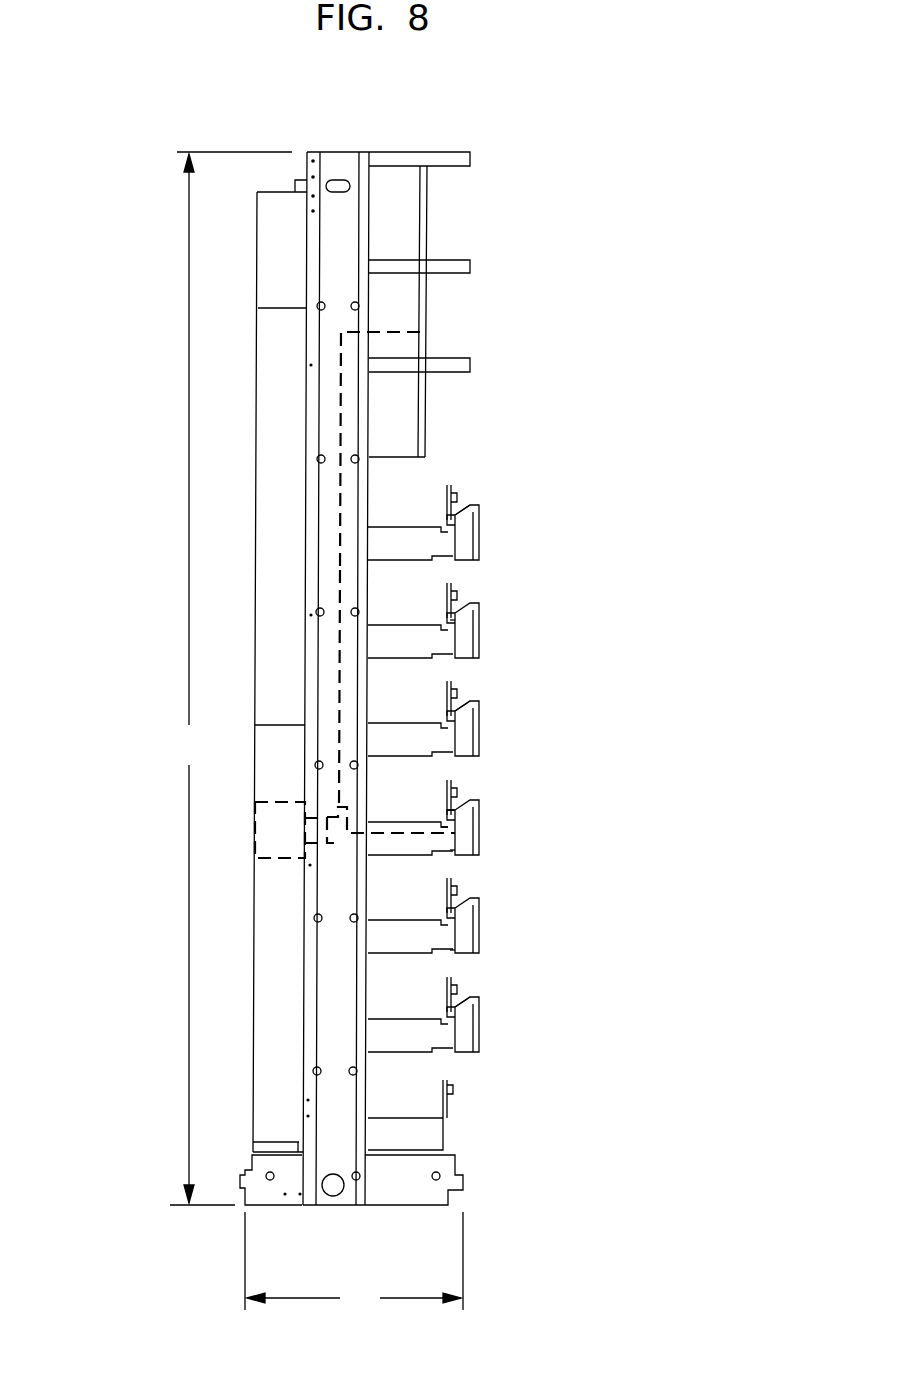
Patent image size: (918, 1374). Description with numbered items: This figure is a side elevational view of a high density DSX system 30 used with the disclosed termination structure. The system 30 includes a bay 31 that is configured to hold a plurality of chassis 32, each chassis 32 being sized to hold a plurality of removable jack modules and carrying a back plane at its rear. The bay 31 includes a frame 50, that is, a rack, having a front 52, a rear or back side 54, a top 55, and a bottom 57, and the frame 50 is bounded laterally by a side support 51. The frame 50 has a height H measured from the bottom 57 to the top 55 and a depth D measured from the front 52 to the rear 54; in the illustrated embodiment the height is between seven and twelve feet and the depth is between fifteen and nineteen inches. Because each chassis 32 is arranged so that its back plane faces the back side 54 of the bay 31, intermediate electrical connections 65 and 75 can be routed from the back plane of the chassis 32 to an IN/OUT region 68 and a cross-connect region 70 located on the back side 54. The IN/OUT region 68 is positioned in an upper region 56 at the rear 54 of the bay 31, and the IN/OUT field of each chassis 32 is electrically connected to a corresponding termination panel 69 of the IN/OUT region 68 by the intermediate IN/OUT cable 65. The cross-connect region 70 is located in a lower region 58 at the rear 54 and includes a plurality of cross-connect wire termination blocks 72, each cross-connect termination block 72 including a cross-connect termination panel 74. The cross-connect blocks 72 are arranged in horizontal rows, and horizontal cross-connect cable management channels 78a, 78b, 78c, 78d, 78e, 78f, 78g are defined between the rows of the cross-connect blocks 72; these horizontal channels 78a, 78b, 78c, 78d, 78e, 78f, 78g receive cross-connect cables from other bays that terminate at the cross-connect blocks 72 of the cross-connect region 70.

The high density DSX system 30 is at (127, 273).
The bay 31 is at (139, 409).
The chassis 32 is at (255, 836).
The frame 50 is at (335, 216).
The side support 51 is at (337, 670).
The front 52 is at (188, 584).
The back side 54 is at (636, 587).
The top 55 is at (340, 152).
The upper region 56 is at (618, 257).
The bottom 57 is at (383, 1205).
The lower region 58 is at (665, 925).
The intermediate IN/OUT cable 65 is at (338, 523).
The IN/OUT region 68 is at (604, 317).
The termination panel 69 is at (430, 213).
The cross-connect region 70 is at (644, 839).
The cross-connect wire termination block 72 is at (479, 541).
The cross-connect termination panel 74 is at (475, 507).
The intermediate electrical connection 75 is at (433, 815).
The horizontal cross-connect cable management channel 78a is at (420, 518).
The horizontal cross-connect cable management channel 78b is at (421, 617).
The horizontal cross-connect cable management channel 78c is at (421, 716).
The horizontal cross-connect cable management channel 78d is at (423, 815).
The horizontal cross-connect cable management channel 78e is at (421, 913).
The horizontal cross-connect cable management channel 78f is at (421, 1012).
The horizontal cross-connect cable management channel 78g is at (421, 1112).